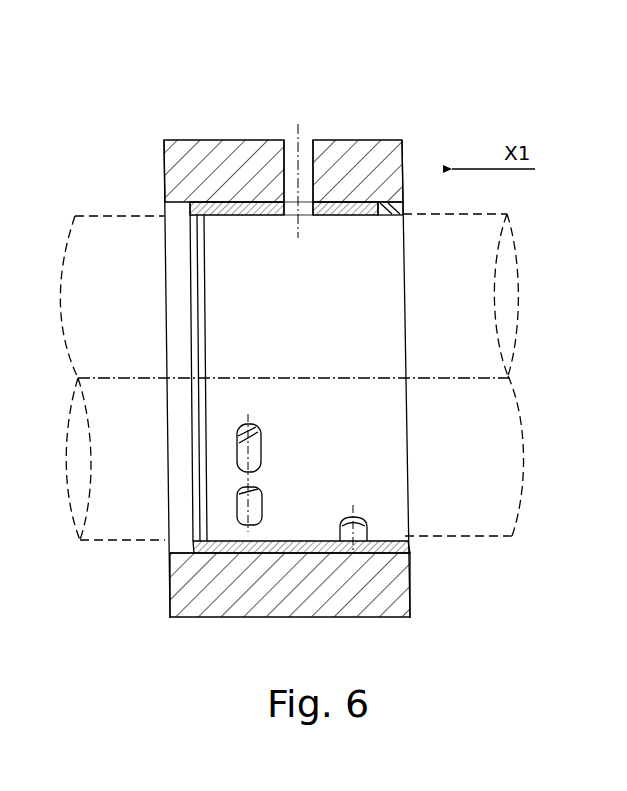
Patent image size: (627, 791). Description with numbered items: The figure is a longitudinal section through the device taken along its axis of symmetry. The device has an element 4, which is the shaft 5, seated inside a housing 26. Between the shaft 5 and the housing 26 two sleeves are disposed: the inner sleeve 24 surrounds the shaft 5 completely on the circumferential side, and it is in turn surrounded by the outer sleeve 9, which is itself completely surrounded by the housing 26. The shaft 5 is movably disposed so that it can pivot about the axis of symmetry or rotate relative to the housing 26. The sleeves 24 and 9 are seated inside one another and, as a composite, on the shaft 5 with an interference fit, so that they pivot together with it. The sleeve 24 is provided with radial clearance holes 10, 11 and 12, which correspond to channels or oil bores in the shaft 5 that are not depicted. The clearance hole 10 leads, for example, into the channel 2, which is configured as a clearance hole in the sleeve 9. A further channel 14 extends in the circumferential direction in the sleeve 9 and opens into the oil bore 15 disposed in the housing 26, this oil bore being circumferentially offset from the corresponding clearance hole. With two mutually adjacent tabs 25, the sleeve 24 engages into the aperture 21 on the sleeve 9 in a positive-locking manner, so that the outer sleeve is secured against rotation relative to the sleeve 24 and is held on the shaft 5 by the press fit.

The channel 2 is at (290, 207).
The element 4 is at (475, 520).
The shaft 5 is at (497, 527).
The sleeve 9 is at (194, 546).
The clearance hole 10 is at (358, 519).
The clearance hole 11 is at (257, 512).
The clearance hole 12 is at (257, 450).
The channel 14 is at (305, 207).
The oil bore 15 is at (289, 158).
The aperture 21 is at (405, 200).
The sleeve 24 is at (220, 297).
The tabs 25 is at (394, 203).
The housing 26 is at (293, 595).